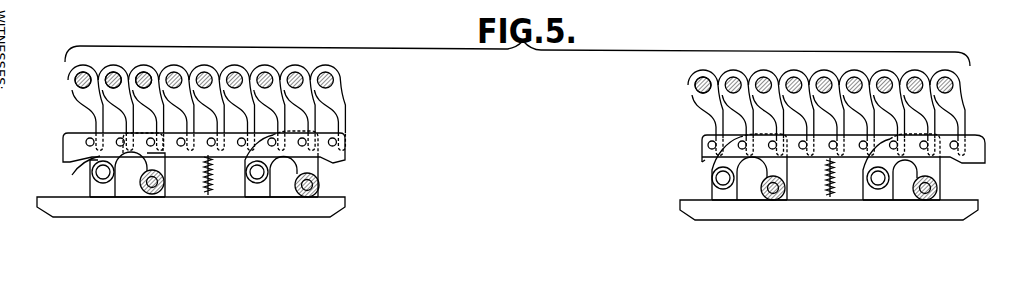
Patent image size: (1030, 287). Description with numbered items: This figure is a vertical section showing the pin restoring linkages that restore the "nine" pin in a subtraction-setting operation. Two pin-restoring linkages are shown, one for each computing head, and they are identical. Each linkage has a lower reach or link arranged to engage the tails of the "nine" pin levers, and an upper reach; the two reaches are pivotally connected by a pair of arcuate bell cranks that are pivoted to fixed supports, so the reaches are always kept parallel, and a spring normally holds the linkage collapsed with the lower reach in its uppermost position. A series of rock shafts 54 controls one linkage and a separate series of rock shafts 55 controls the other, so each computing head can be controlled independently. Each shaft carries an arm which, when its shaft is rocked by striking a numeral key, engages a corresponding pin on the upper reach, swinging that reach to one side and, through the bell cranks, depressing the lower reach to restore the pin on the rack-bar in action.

The rock shafts 54 is at (140, 72).
The rock shafts 55 is at (697, 85).